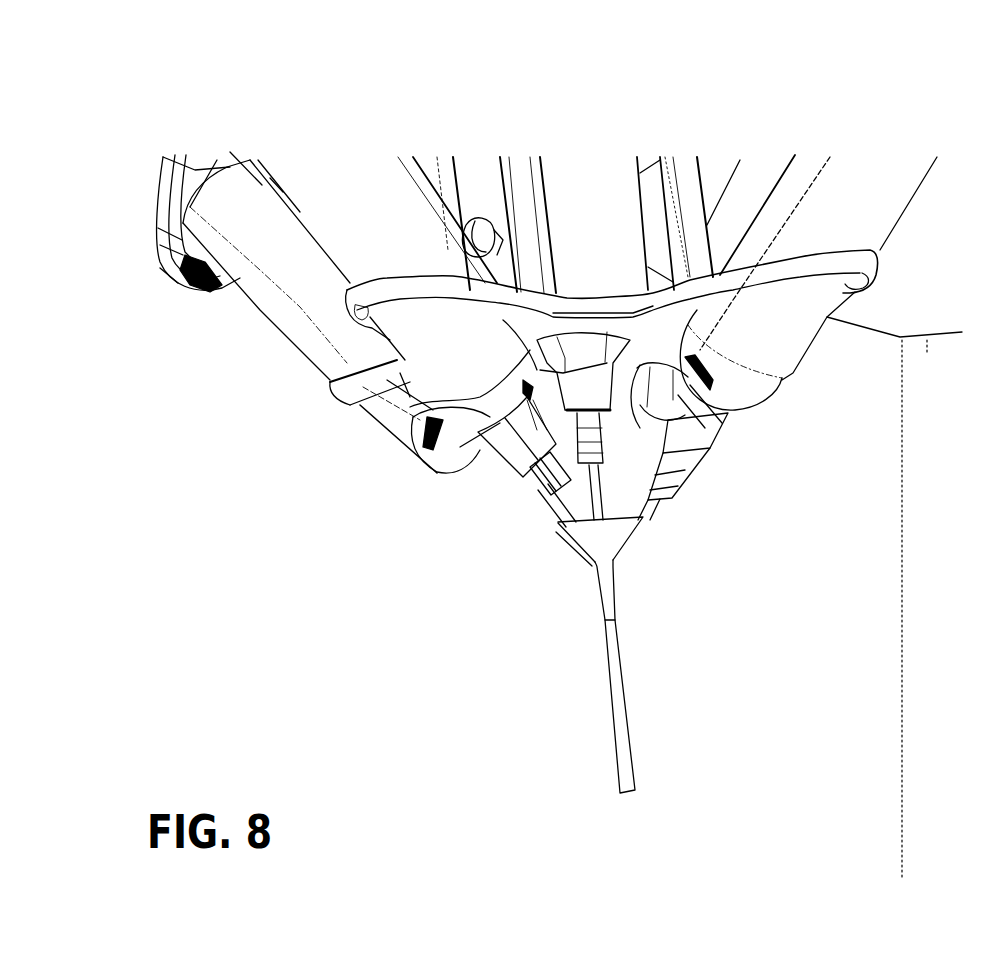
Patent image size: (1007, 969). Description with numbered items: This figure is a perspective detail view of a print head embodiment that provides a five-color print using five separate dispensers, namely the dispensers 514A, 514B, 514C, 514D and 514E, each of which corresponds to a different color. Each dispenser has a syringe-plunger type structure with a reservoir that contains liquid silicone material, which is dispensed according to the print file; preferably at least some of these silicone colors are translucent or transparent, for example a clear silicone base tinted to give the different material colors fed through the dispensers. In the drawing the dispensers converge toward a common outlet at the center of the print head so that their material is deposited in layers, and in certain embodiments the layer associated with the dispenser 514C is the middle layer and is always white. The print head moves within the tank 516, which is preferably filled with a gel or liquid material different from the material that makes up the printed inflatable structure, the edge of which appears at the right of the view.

The dispenser 514A is at (773, 370).
The dispenser 514B is at (371, 427).
The dispenser 514C is at (628, 253).
The dispenser 514D is at (345, 262).
The dispenser 514E is at (660, 487).
The tank 516 is at (927, 352).